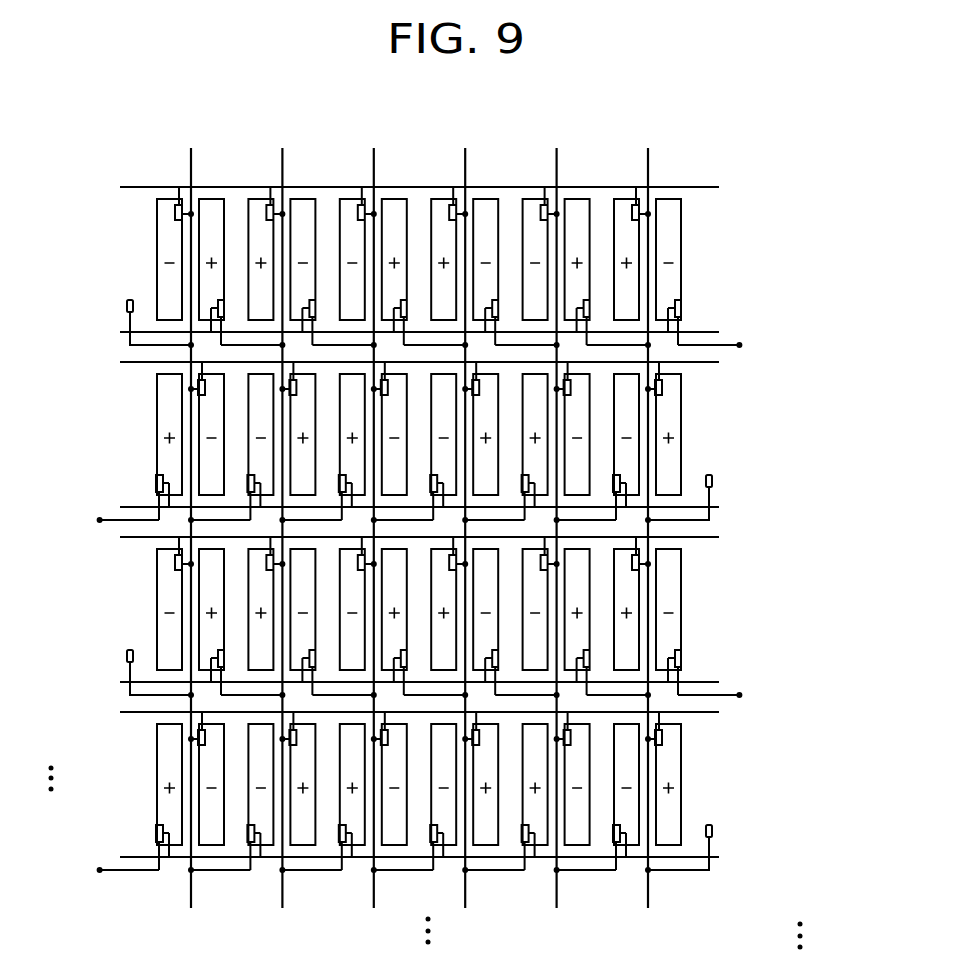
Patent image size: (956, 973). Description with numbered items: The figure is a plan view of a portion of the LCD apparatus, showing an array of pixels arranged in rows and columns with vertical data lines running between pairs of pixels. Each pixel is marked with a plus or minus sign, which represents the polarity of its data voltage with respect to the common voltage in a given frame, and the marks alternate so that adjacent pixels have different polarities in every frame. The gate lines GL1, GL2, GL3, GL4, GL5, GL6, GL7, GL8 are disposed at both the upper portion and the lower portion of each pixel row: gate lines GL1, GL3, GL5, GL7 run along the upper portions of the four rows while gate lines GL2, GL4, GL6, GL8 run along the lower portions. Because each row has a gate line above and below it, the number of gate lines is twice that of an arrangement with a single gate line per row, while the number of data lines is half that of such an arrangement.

The gate line GL1 is at (372, 195).
The gate line GL2 is at (473, 340).
The gate line GL3 is at (372, 370).
The gate line GL4 is at (473, 515).
The gate line GL5 is at (372, 545).
The gate line GL6 is at (473, 690).
The gate line GL7 is at (372, 720).
The gate line GL8 is at (473, 865).